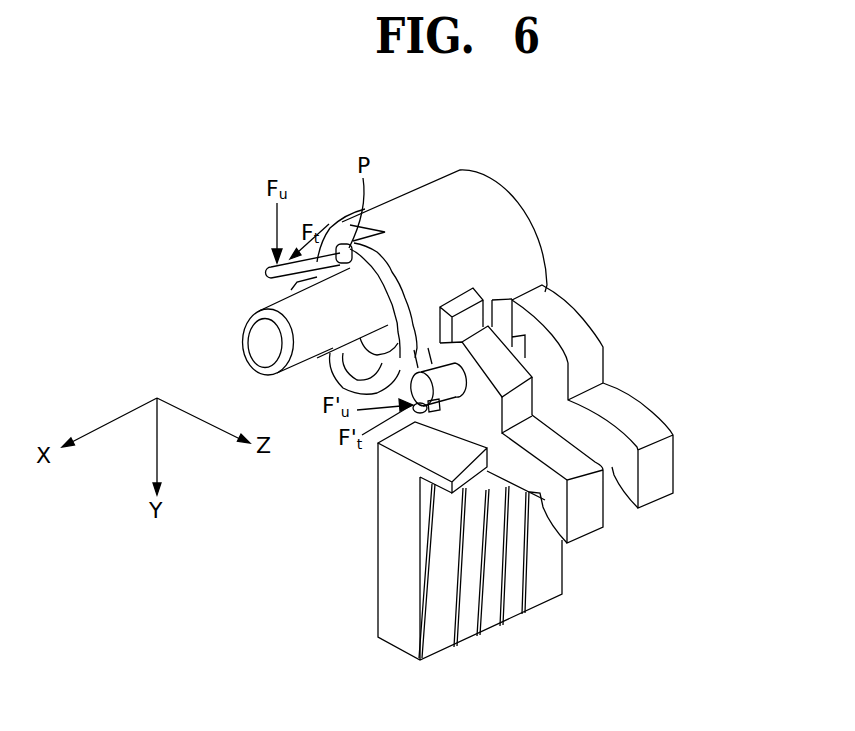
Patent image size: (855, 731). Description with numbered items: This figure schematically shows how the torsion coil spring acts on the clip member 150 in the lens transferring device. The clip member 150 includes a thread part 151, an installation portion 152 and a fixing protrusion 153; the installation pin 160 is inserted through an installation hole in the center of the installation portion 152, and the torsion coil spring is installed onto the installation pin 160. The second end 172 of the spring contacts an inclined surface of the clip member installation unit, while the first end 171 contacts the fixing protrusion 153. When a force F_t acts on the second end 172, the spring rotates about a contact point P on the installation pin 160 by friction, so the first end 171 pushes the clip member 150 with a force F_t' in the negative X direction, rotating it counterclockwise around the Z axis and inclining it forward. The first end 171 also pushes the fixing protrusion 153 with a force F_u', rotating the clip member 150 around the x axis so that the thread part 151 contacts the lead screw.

The clip member 150 is at (590, 270).
The thread part 151 is at (507, 613).
The installation portion 152 is at (415, 205).
The fixing protrusion 153 is at (447, 387).
The installation pin 160 is at (260, 348).
The first end 171 is at (412, 412).
The second end 172 is at (265, 272).